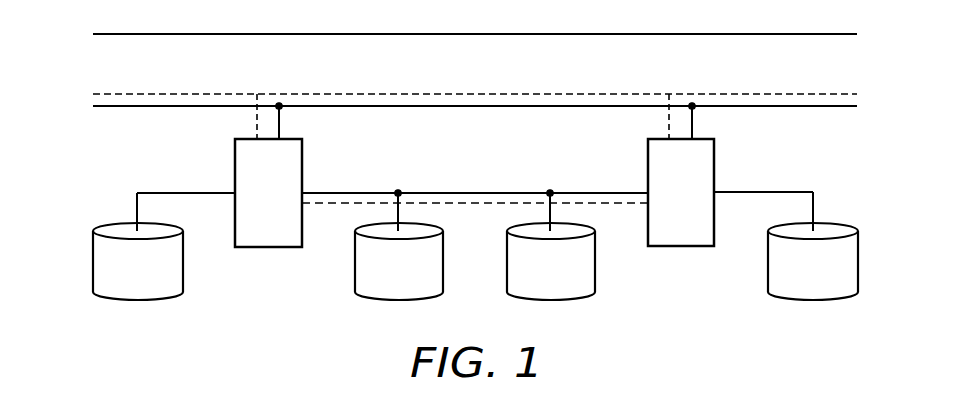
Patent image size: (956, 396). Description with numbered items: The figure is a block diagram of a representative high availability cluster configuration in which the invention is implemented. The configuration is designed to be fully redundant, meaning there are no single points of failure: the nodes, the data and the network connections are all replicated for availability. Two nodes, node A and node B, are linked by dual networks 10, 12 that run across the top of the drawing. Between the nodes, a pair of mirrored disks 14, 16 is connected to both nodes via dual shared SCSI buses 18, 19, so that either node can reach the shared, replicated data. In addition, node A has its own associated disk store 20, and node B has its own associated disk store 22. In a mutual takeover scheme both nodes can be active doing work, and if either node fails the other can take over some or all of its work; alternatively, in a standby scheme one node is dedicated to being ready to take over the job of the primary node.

The dual network 10 is at (754, 128).
The dual network 12 is at (795, 93).
The mirrored disk 14 is at (360, 263).
The mirrored disk 16 is at (590, 263).
The shared SCSI bus 18 is at (598, 192).
The shared SCSI bus 19 is at (462, 203).
The disk store 20 is at (97, 263).
The disk store 22 is at (853, 262).